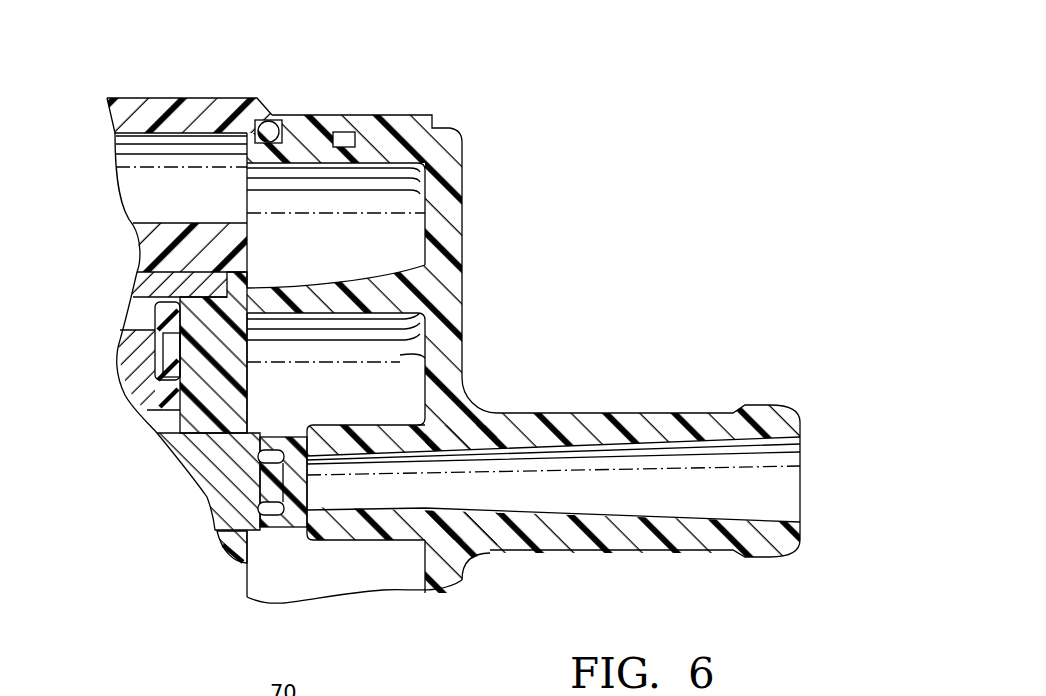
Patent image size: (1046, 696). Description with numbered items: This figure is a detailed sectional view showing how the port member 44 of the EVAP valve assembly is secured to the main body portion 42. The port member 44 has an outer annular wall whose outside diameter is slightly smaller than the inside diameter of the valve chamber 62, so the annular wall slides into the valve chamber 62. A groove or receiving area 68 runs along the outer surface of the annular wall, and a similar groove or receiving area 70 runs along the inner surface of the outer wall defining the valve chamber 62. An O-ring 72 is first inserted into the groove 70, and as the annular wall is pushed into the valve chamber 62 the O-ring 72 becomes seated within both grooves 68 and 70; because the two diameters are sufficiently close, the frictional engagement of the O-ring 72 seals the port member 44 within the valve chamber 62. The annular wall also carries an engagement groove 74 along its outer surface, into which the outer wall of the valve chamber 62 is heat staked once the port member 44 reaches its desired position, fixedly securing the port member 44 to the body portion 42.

The main body portion 42 is at (137, 96).
The port member 44 is at (646, 413).
The valve chamber 62 is at (397, 252).
The groove or receiving area 68 is at (253, 134).
The groove or receiving area 70 is at (258, 123).
The O-ring 72 is at (268, 128).
The engagement groove 74 is at (347, 143).